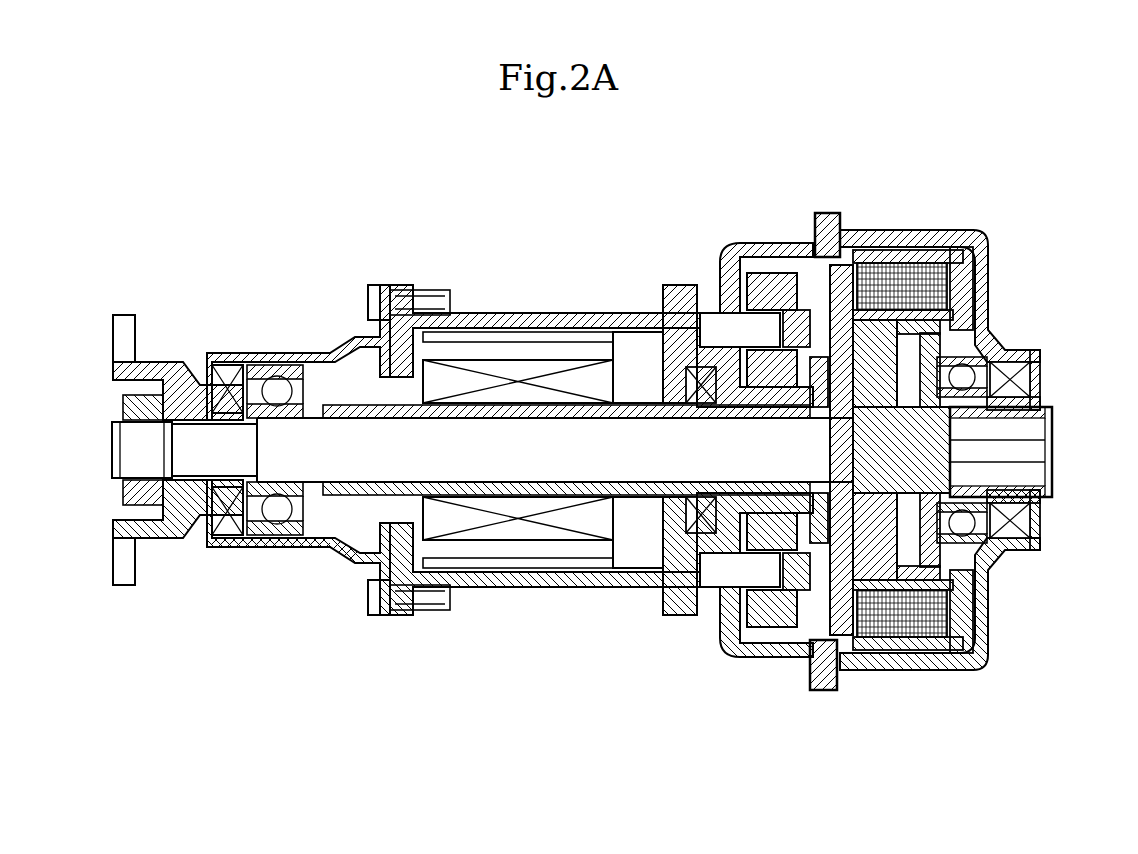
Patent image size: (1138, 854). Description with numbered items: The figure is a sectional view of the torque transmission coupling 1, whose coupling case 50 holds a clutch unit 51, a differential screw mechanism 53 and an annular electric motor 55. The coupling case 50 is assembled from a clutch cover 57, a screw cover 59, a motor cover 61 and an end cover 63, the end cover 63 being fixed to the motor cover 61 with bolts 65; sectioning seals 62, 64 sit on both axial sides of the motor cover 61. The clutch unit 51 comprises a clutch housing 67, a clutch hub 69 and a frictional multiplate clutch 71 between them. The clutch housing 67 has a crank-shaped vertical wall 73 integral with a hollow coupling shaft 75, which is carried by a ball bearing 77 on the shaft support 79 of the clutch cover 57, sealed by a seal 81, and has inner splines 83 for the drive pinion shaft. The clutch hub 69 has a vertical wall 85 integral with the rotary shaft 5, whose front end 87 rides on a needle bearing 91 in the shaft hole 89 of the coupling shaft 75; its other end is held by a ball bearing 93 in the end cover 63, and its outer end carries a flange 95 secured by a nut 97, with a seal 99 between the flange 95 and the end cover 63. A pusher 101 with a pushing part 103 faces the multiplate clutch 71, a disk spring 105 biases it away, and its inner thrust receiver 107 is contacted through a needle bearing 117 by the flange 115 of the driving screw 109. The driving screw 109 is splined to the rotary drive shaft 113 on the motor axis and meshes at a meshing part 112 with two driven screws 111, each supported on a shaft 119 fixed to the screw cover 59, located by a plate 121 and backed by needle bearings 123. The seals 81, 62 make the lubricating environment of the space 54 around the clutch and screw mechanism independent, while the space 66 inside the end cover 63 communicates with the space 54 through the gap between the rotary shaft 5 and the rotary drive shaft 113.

The torque transmission coupling 1 is at (856, 180).
The rotary shaft 5 is at (505, 445).
The coupling case 50 is at (964, 238).
The clutch unit 51 is at (970, 232).
The differential screw mechanism 53 is at (757, 246).
The space 54 is at (812, 648).
The electric motor 55 is at (540, 357).
The clutch cover 57 is at (983, 240).
The screw cover 59 is at (790, 280).
The motor cover 61 is at (577, 311).
The sectioning seal 62 is at (625, 570).
The end cover 63 is at (310, 352).
The sectioning seal 64 is at (365, 565).
The bolts 65 is at (377, 292).
The space 66 is at (320, 548).
The clutch housing 67 is at (902, 275).
The clutch hub 69 is at (956, 306).
The frictional multiplate clutch 71 is at (958, 250).
The vertical wall 73 is at (968, 288).
The coupling shaft 75 is at (1034, 388).
The ball bearing 77 is at (942, 336).
The shaft support 79 is at (992, 352).
The seal 81 is at (1033, 360).
The inner splines 83 is at (1022, 424).
The vertical wall 85 is at (858, 424).
The front end 87 is at (985, 460).
The shaft hole 89 is at (1034, 510).
The needle bearing 91 is at (985, 440).
The ball bearing 93 is at (282, 362).
The flange 95 is at (118, 318).
The nut 97 is at (148, 372).
The seal 99 is at (220, 362).
The pusher 101 is at (830, 214).
The pushing part 103 is at (882, 268).
The disk spring 105 is at (842, 268).
The thrust receiver 107 is at (838, 402).
The driving screw 109 is at (760, 395).
The driven screws 111 is at (740, 300).
The meshing part 112 is at (680, 570).
The rotary drive shaft 113 is at (640, 345).
The flange 115 is at (800, 400).
The needle bearing 117 is at (798, 318).
The shaft 119 is at (700, 320).
The plate 121 is at (816, 360).
The needle bearings 123 is at (708, 300).